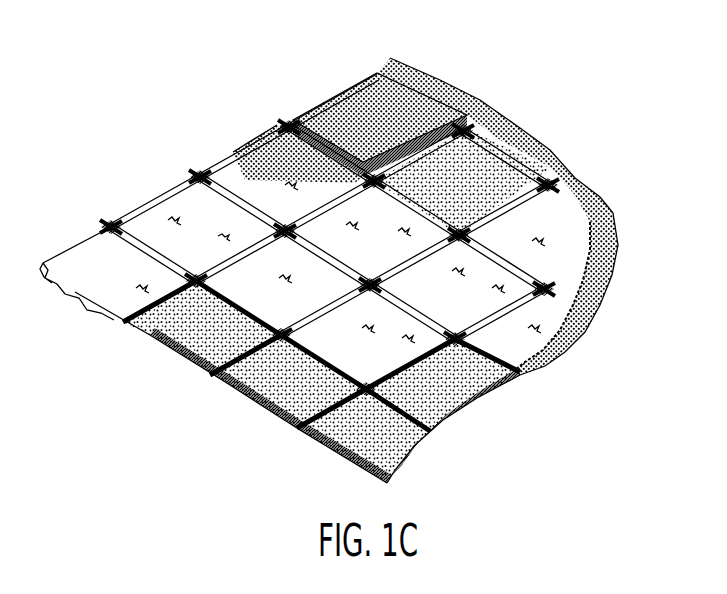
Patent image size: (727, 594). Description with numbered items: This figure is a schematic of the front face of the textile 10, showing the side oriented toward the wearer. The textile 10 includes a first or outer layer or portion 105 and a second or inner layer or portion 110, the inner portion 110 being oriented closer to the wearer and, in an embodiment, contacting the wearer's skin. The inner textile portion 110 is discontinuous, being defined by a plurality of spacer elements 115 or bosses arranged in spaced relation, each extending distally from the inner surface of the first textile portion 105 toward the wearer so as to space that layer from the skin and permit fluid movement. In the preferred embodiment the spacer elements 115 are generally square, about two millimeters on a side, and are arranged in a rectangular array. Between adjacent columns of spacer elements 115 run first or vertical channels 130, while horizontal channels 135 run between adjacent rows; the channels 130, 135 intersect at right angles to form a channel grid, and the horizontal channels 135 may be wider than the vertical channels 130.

The textile 10 is at (220, 52).
The first or outer layer or portion 105 is at (613, 267).
The second or inner layer or portion 110 is at (563, 367).
The spacer element 115 is at (263, 135).
The first or vertical channel 130 is at (483, 103).
The horizontal channel 135 is at (194, 174).